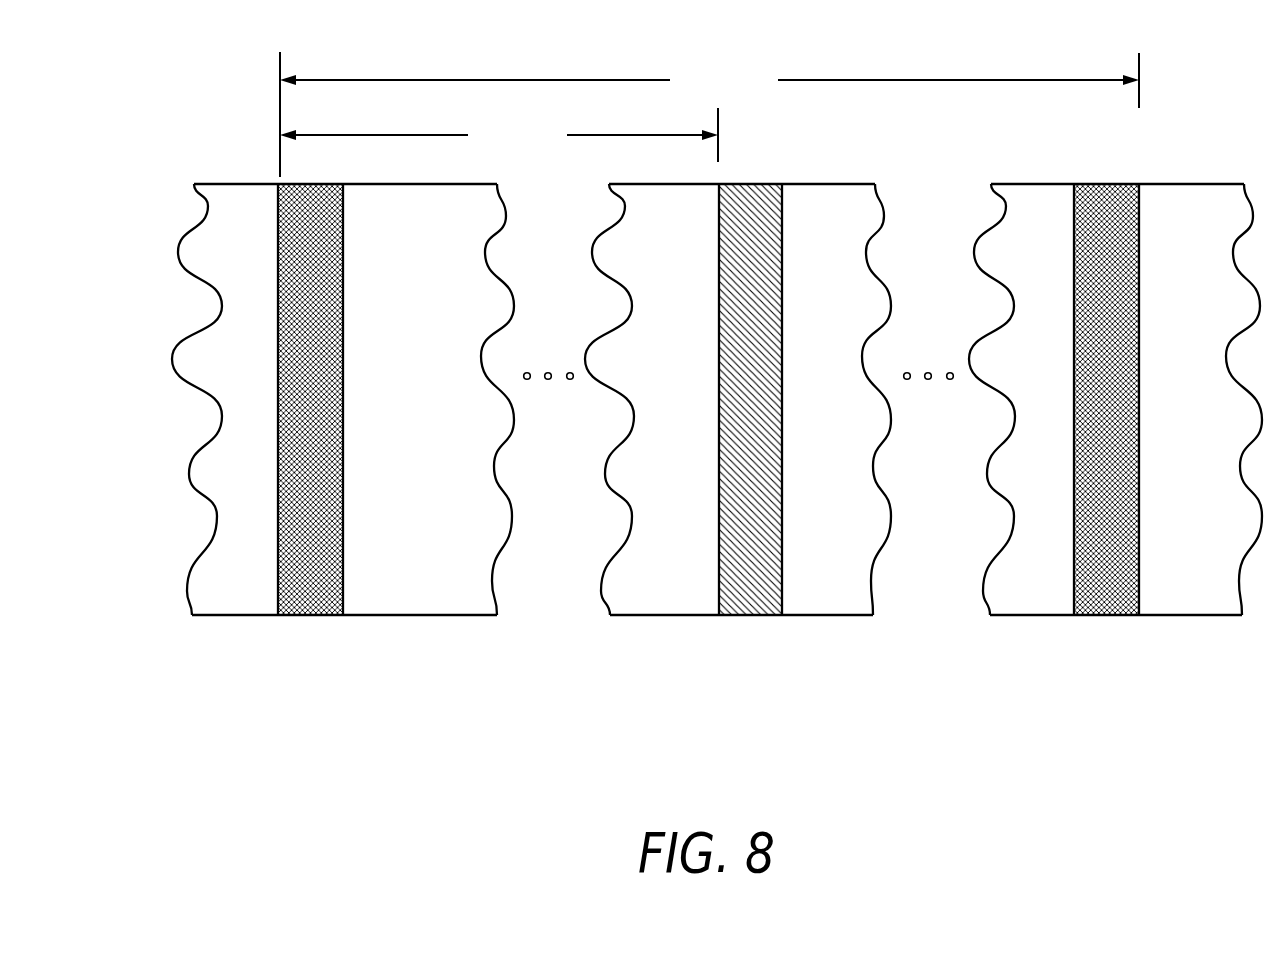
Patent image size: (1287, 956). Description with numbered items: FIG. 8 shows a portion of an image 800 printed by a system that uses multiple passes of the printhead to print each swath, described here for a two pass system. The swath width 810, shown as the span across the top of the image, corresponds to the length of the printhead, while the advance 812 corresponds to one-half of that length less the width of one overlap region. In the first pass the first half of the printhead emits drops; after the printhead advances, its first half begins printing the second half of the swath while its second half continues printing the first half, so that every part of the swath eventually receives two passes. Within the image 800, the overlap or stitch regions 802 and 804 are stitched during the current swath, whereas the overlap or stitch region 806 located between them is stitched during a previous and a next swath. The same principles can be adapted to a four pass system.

The image 800 is at (717, 480).
The overlap or stitch region 802 is at (330, 607).
The overlap or stitch region 804 is at (1125, 607).
The overlap or stitch region 806 is at (773, 607).
The swath width 810 is at (709, 114).
The advance 812 is at (499, 135).